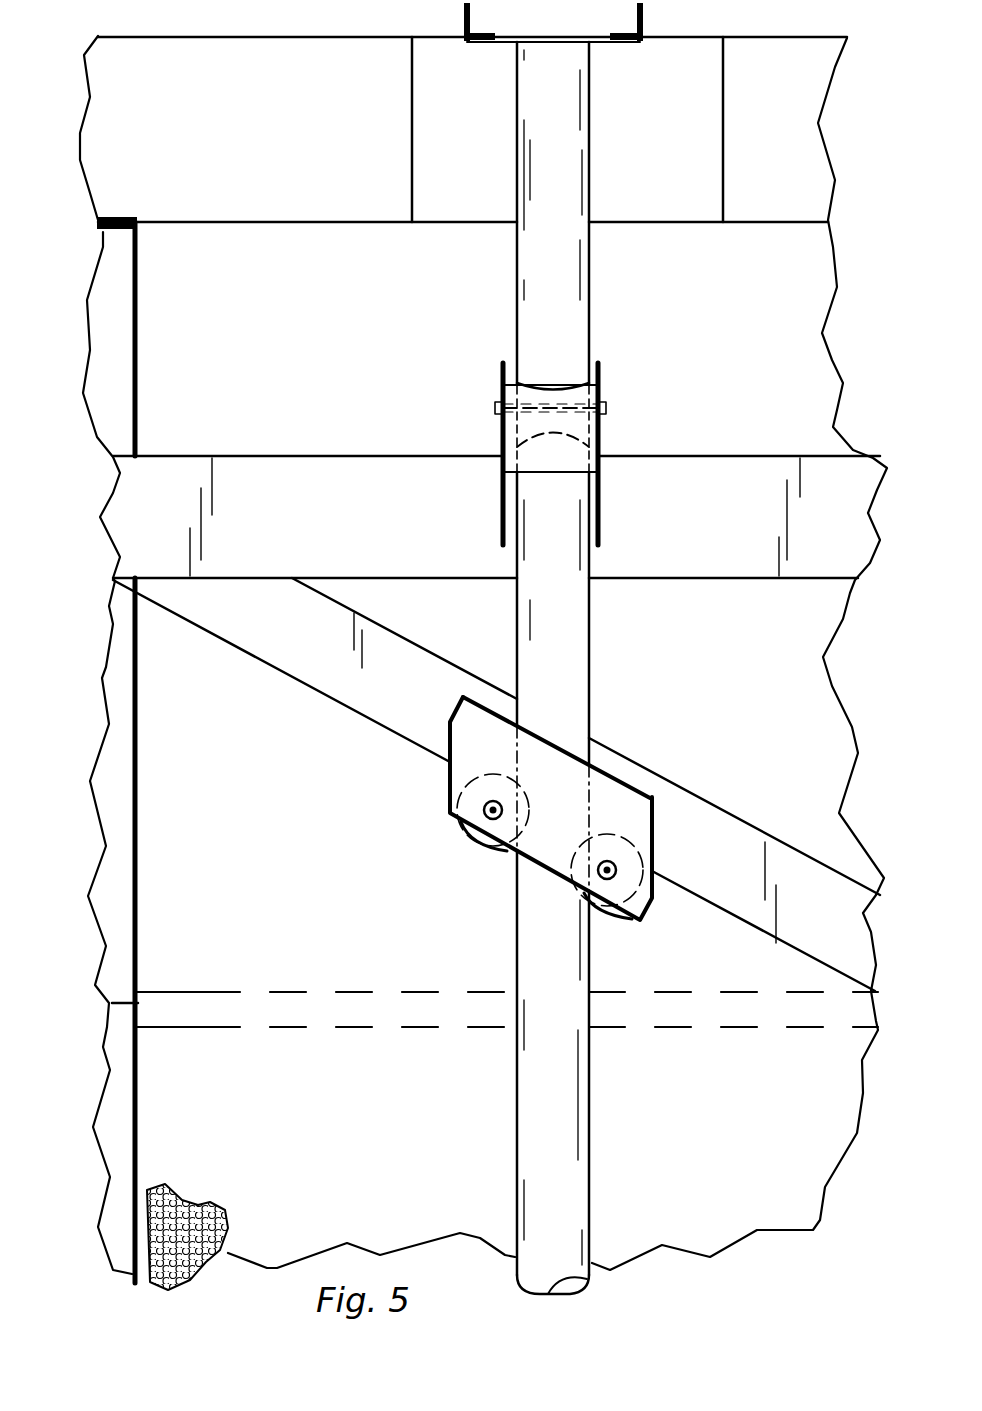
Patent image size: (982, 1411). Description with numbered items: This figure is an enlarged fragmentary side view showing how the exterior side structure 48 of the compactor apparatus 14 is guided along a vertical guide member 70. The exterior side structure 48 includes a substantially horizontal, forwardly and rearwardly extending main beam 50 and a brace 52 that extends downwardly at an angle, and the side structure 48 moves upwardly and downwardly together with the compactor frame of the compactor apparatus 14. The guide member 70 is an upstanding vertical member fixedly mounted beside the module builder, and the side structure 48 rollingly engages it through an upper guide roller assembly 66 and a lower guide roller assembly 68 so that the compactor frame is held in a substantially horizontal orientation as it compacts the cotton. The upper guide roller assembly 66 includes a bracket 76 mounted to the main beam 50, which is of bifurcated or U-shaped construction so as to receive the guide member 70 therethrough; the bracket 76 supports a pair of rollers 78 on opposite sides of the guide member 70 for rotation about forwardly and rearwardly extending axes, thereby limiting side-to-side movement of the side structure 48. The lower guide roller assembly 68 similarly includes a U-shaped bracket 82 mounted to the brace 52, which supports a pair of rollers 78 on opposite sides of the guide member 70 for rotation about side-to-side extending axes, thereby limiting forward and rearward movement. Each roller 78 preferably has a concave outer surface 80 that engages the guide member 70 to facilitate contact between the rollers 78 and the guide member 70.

The compactor apparatus 14 is at (306, 833).
The exterior side structure 48 is at (186, 450).
The main beam 50 is at (321, 455).
The brace 52 is at (722, 808).
The upper guide roller assembly 66 is at (500, 385).
The lower guide roller assembly 68 is at (448, 812).
The guide member 70 is at (591, 302).
The bracket 76 is at (603, 523).
The roller 78 is at (542, 436).
The concave outer surface 80 is at (546, 382).
The bracket 82 is at (622, 782).